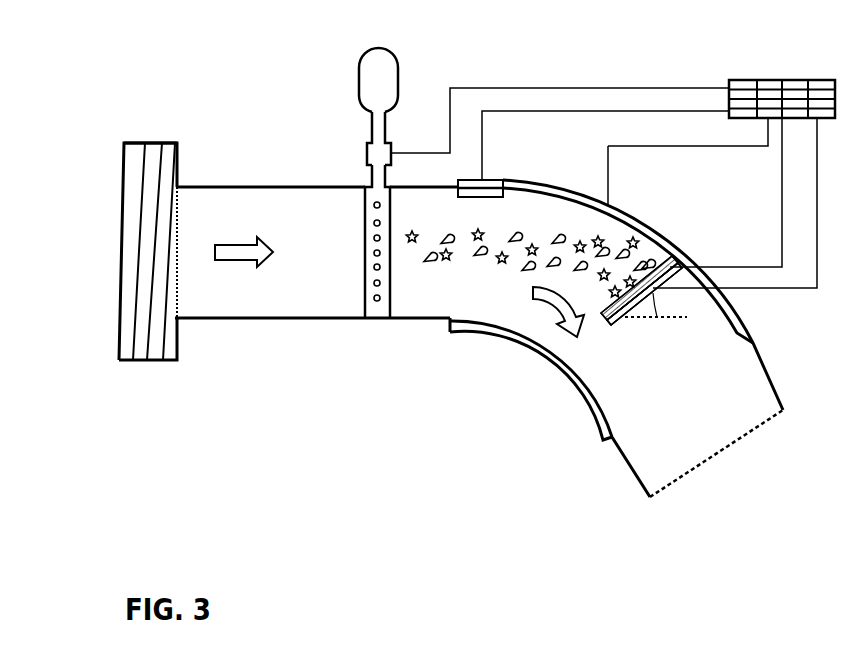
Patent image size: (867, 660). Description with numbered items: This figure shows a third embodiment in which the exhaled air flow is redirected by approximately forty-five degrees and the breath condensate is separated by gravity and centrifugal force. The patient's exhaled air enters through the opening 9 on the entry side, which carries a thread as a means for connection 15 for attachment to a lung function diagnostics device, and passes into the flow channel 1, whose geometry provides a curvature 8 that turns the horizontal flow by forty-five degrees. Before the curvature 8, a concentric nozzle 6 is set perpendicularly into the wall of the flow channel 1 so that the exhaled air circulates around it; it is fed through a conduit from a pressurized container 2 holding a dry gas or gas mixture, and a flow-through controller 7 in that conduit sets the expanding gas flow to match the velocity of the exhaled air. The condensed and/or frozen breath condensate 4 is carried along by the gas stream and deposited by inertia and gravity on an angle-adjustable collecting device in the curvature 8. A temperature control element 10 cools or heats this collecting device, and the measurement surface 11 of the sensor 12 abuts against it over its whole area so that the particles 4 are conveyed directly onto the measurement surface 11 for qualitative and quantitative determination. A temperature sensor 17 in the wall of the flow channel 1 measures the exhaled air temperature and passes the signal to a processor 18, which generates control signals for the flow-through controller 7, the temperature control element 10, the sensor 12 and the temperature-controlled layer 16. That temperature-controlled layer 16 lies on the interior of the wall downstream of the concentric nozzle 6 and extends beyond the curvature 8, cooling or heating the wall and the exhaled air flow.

The flow channel 1 is at (298, 277).
The pressurized container 2 is at (370, 77).
The condensed and/or frozen breath condensate 4 is at (612, 243).
The concentric nozzle 6 is at (377, 313).
The flow-through controller 7 is at (367, 152).
The curvature 8 is at (547, 322).
The opening on the entry side 9 is at (113, 292).
The temperature control element 10 is at (652, 289).
The measurement surface of the sensor 11 is at (652, 291).
The sensor 12 is at (653, 283).
The means for connection 15 is at (126, 148).
The temperature-controlled layer 16 is at (562, 190).
The temperature sensor 17 is at (490, 192).
The processor 18 is at (791, 83).